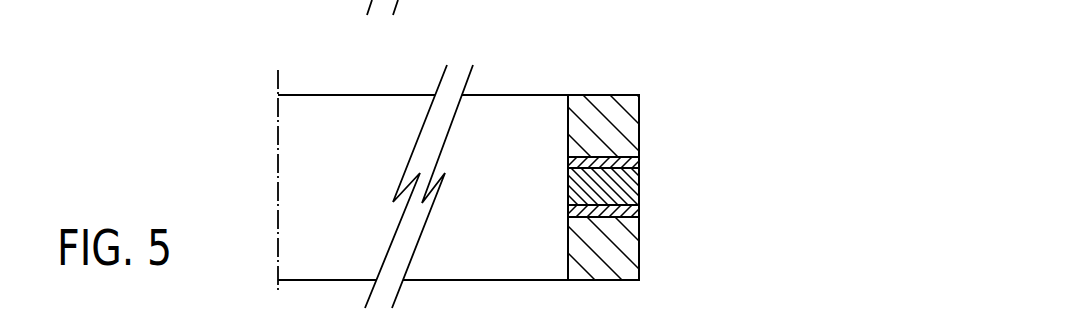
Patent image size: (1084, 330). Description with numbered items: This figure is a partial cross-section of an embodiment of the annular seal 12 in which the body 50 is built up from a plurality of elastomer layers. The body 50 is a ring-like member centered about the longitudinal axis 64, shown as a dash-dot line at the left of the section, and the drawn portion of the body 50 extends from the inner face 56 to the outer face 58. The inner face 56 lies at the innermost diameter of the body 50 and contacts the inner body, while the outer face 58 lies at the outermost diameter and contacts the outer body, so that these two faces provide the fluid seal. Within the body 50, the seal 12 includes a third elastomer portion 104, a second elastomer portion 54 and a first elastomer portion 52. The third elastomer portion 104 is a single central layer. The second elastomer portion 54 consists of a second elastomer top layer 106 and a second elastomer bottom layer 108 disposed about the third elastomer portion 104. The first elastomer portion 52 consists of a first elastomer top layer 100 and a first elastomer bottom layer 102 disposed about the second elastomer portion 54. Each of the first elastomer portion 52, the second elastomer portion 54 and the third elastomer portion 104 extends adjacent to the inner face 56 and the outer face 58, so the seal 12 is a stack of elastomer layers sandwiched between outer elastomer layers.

The annular seal 12 is at (733, 72).
The body 50 is at (605, 94).
The first elastomer portion 52 is at (647, 196).
The second elastomer portion 54 is at (658, 188).
The inner face 56 is at (568, 246).
The outer face 58 is at (640, 249).
The longitudinal axis 64 is at (281, 80).
The first elastomer top layer 100 is at (640, 106).
The first elastomer bottom layer 102 is at (640, 275).
The third elastomer portion 104 is at (640, 184).
The second elastomer top layer 106 is at (640, 162).
The second elastomer bottom layer 108 is at (640, 210).